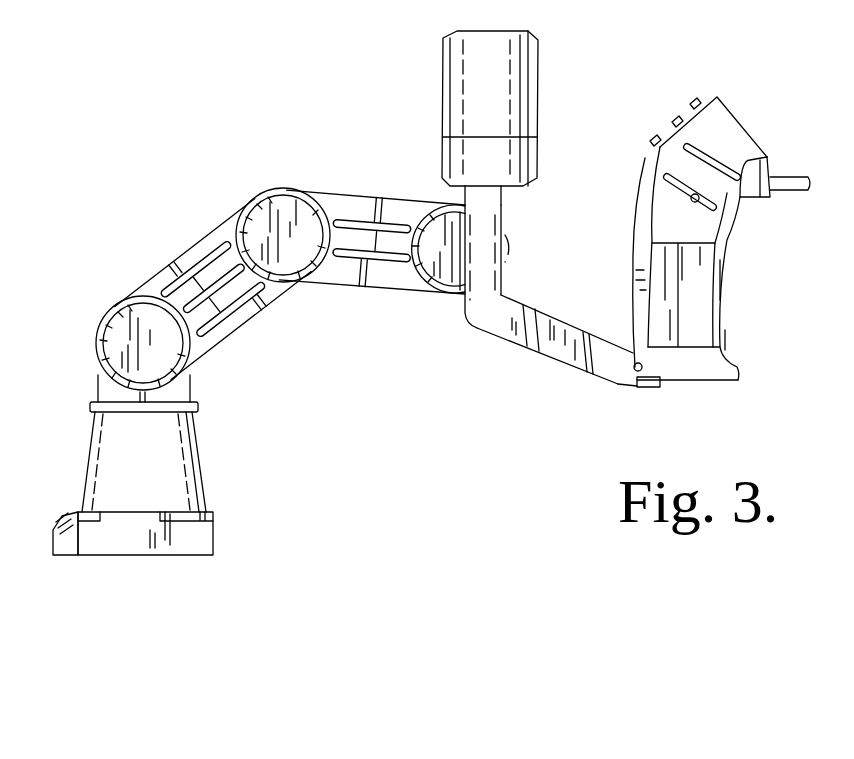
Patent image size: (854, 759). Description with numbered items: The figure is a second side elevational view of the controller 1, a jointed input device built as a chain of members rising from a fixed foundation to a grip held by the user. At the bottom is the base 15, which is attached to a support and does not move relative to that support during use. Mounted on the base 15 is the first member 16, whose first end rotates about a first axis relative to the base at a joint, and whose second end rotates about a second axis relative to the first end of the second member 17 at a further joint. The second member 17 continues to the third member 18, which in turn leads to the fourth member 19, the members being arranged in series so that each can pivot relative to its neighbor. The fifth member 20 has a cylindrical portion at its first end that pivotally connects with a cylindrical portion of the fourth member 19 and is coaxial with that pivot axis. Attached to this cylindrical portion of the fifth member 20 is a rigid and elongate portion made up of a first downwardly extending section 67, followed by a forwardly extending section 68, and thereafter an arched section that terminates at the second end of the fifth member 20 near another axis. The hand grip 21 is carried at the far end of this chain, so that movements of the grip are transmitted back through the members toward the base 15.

The controller 1 is at (96, 262).
The base 15 is at (140, 546).
The first member 16 is at (206, 448).
The second member 17 is at (245, 320).
The third member 18 is at (354, 290).
The fourth member 19 is at (437, 194).
The fifth member 20 is at (551, 309).
The hand grip 21 is at (733, 280).
The first downwardly extending section 67 is at (488, 243).
The forwardly extending section 68 is at (546, 313).